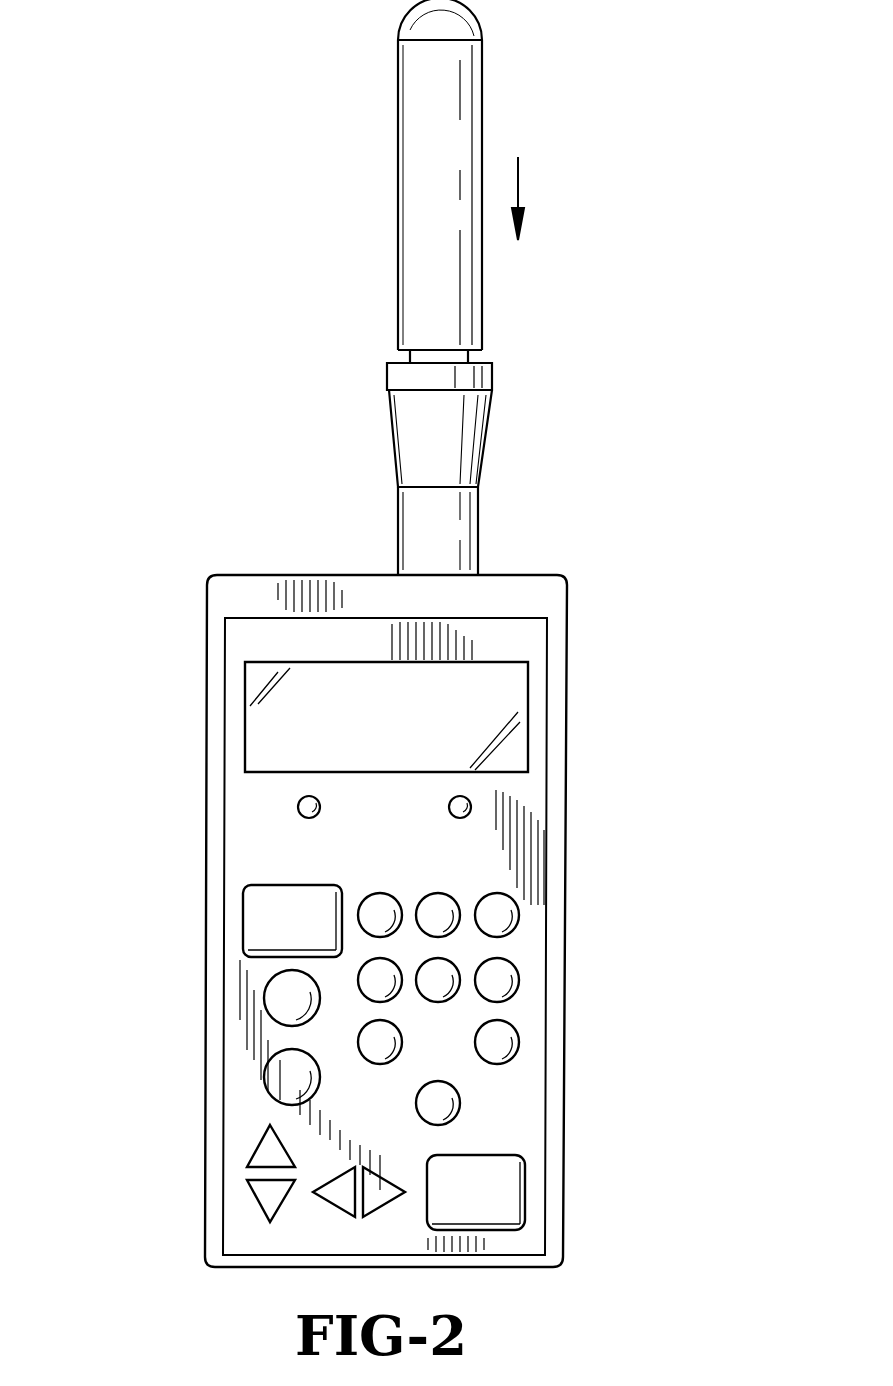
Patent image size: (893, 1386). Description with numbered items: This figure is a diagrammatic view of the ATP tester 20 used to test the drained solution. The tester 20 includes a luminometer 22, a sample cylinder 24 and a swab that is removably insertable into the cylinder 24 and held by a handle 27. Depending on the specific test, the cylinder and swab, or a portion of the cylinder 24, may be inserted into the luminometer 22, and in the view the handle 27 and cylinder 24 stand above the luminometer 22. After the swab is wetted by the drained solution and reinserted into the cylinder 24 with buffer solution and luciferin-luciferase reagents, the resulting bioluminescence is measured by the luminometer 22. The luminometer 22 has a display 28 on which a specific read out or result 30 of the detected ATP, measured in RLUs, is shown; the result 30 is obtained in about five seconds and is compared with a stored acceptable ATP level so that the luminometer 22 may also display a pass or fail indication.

The ATP tester 20 is at (302, 908).
The luminometer 22 is at (207, 810).
The sample cylinder 24 is at (440, 350).
The handle 27 is at (398, 184).
The display 28 is at (245, 688).
The result 30 is at (245, 750).